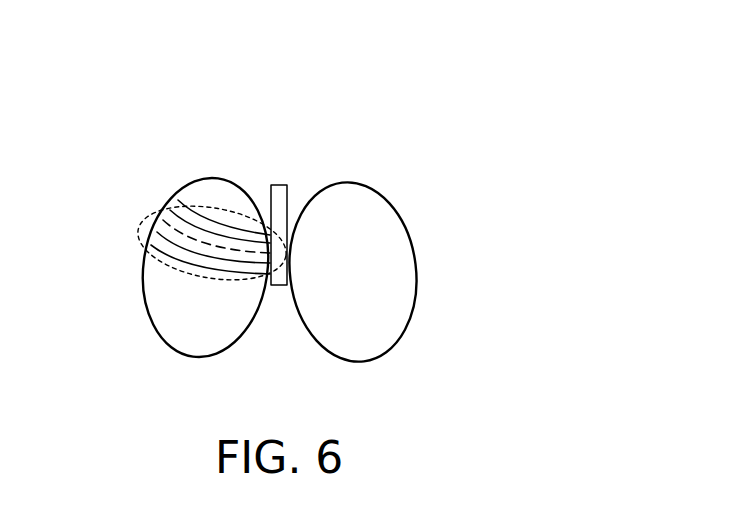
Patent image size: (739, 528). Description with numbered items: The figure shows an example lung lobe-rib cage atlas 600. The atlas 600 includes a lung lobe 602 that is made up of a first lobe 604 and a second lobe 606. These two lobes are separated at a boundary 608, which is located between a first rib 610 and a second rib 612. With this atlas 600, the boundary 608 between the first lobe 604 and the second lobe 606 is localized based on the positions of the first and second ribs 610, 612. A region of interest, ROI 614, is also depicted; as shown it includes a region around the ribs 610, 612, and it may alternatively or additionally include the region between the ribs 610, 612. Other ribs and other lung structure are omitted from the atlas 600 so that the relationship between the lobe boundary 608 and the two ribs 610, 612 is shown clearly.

The atlas 600 is at (296, 116).
The lung lobe 602 is at (224, 178).
The first lobe 604 is at (192, 196).
The second lobe 606 is at (161, 312).
The boundary 608 is at (236, 249).
The first rib 610 is at (196, 193).
The second rib 612 is at (173, 256).
The ROI 614 is at (140, 228).